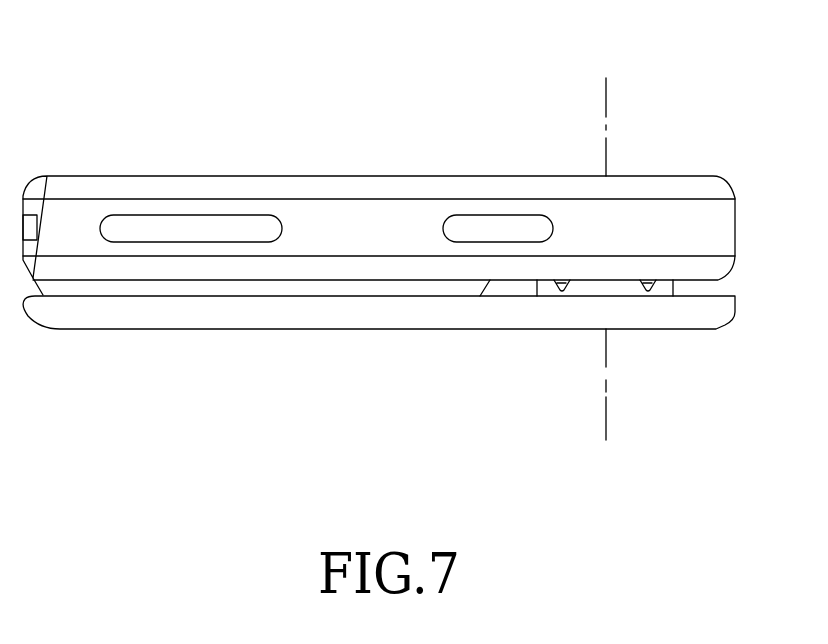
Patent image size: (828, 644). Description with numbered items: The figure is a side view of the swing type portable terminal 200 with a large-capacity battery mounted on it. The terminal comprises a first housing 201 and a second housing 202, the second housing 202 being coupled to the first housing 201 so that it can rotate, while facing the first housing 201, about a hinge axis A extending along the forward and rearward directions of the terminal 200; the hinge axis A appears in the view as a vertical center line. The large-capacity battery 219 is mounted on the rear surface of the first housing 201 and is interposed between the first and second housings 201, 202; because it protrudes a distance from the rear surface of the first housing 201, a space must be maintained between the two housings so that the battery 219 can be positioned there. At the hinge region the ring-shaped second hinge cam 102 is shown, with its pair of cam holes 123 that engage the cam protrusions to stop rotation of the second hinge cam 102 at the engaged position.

The portable terminal 200 is at (118, 24).
The first housing 201 is at (343, 164).
The second housing 202 is at (350, 333).
The large-capacity battery 219 is at (185, 284).
The cam holes 123 is at (558, 296).
The second hinge cam 102 is at (610, 288).
The hinge axis A is at (606, 430).